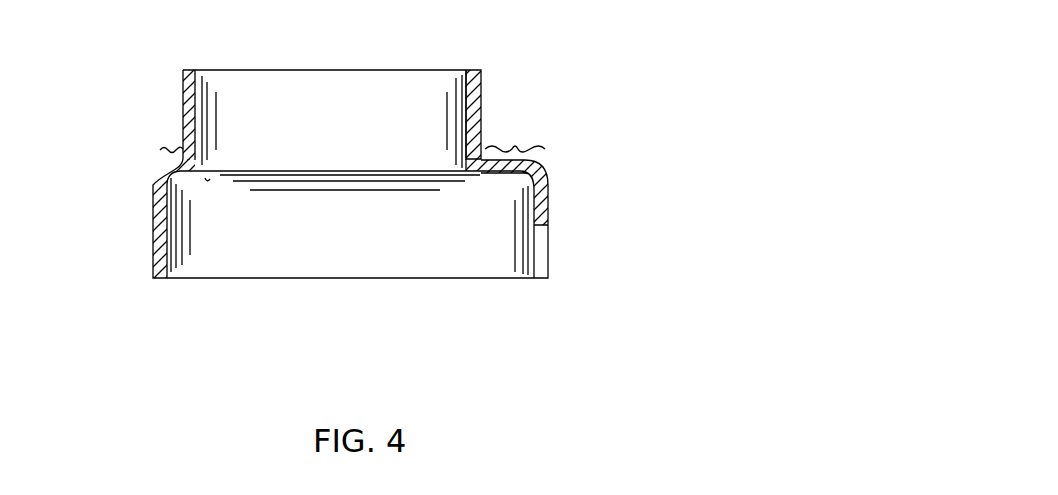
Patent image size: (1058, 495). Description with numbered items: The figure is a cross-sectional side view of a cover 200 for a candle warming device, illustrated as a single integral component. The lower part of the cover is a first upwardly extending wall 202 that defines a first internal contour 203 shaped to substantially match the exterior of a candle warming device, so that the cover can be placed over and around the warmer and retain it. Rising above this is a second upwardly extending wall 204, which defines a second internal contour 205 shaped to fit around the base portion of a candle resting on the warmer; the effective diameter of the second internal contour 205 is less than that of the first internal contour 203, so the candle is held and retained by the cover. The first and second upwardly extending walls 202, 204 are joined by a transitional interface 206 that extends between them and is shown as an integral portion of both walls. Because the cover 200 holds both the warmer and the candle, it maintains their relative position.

The cover 200 is at (607, 190).
The first upwardly extending wall 202 is at (545, 210).
The first internal contour 203 is at (408, 256).
The second upwardly extending wall 204 is at (482, 83).
The second internal contour 205 is at (361, 134).
The transitional interface 206 is at (173, 147).